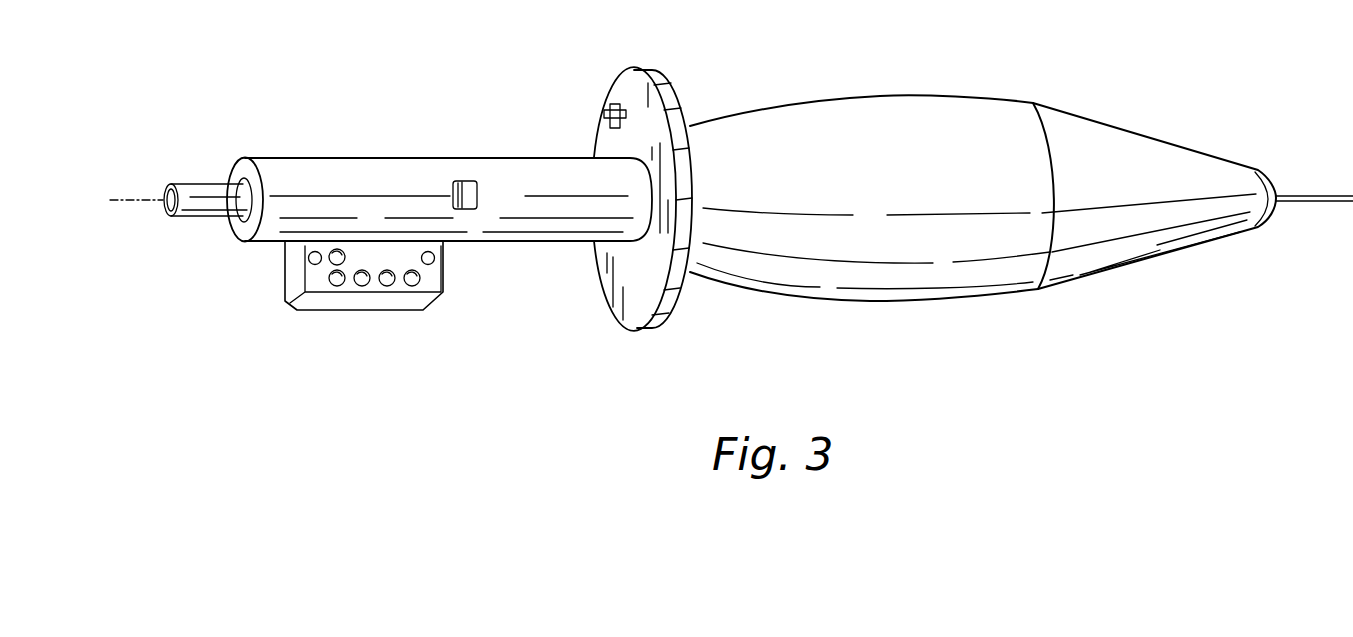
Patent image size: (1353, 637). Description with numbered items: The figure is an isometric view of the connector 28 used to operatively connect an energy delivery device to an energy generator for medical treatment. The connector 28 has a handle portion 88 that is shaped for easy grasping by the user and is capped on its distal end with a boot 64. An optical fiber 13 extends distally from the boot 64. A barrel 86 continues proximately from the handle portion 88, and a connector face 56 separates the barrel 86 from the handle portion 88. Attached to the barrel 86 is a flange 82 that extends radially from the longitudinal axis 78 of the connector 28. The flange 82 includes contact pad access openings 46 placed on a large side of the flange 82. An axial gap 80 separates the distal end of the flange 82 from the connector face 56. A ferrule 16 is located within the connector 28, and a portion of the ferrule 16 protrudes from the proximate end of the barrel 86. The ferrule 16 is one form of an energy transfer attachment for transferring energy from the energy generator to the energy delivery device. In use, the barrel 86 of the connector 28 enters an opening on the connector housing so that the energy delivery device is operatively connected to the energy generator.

The optical fiber 13 is at (1318, 203).
The ferrule 16 is at (200, 217).
The connector 28 is at (735, 73).
The contact pad access openings 46 is at (388, 285).
The connector face 56 is at (642, 72).
The boot 64 is at (1180, 137).
The longitudinal axis 78 is at (148, 200).
The axial gap 80 is at (556, 333).
The flange 82 is at (438, 280).
The barrel 86 is at (303, 158).
The handle portion 88 is at (920, 95).